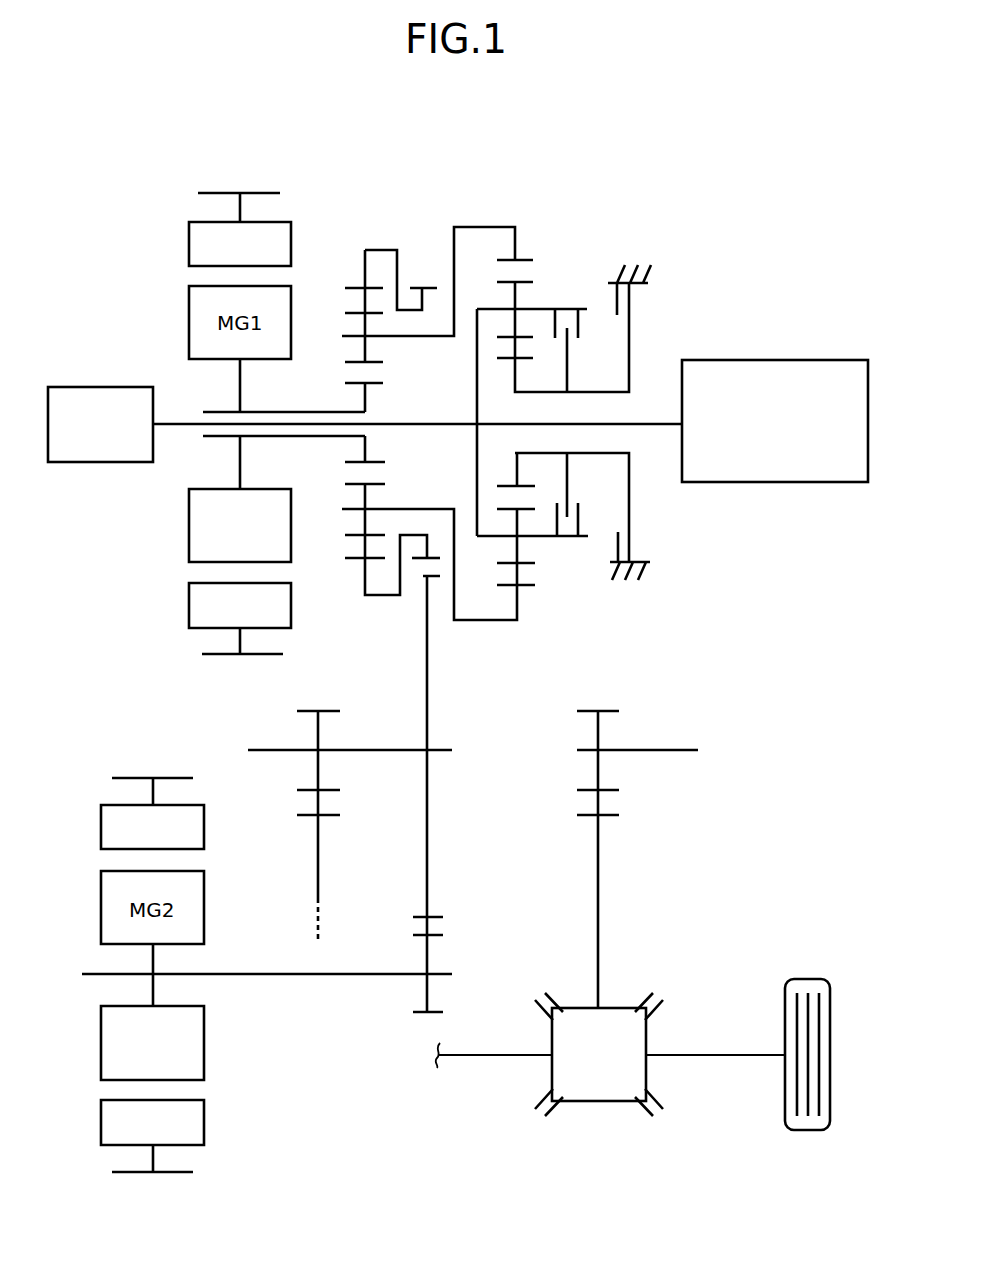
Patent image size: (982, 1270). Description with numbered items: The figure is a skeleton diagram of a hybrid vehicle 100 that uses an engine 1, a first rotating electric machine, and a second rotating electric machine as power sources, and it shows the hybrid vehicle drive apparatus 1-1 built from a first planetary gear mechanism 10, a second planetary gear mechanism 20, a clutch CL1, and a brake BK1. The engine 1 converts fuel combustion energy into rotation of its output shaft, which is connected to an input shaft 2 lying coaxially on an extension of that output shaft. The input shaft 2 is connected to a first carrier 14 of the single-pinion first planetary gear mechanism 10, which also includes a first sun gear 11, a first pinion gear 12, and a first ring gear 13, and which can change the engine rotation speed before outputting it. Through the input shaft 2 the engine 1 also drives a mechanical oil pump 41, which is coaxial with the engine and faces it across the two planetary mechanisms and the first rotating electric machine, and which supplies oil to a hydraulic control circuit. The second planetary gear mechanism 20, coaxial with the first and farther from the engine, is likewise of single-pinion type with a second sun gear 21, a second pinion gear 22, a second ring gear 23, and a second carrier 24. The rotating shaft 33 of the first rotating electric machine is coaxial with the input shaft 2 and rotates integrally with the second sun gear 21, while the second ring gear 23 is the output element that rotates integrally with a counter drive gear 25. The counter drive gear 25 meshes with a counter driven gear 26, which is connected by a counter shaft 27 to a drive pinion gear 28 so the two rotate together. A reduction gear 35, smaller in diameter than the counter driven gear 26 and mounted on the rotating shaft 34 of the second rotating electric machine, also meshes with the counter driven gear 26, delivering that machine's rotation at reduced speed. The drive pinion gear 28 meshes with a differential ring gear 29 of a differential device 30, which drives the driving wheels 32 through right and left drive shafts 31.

The vehicle 100 is at (142, 162).
The hybrid vehicle drive apparatus 1-1 is at (526, 170).
The engine 1 is at (802, 360).
The input shaft 2 is at (652, 424).
The first planetary gear mechanism 10 is at (538, 230).
The first sun gear 11 is at (497, 358).
The first pinion gear 12 is at (497, 337).
The first ring gear 13 is at (533, 261).
The first carrier 14 is at (477, 405).
The second planetary gear mechanism 20 is at (349, 244).
The second sun gear 21 is at (345, 384).
The second pinion gear 22 is at (345, 363).
The second ring gear 23 is at (345, 289).
The second carrier 24 is at (412, 338).
The counter drive gear 25 is at (438, 558).
The counter driven gear 26 is at (415, 576).
The counter shaft 27 is at (380, 750).
The drive pinion gear 28 is at (330, 711).
The differential ring gear 29 is at (340, 815).
The differential device 30 is at (632, 978).
The drive shafts 31 is at (727, 1055).
The driving wheels 32 is at (803, 979).
The rotating shaft of the first rotating electric machine 33 is at (212, 412).
The rotating shaft of the second rotating electric machine 34 is at (252, 974).
The reduction gear 35 is at (443, 935).
The mechanical oil pump 41 is at (122, 387).
The clutch CL1 is at (575, 282).
The brake BK1 is at (665, 293).